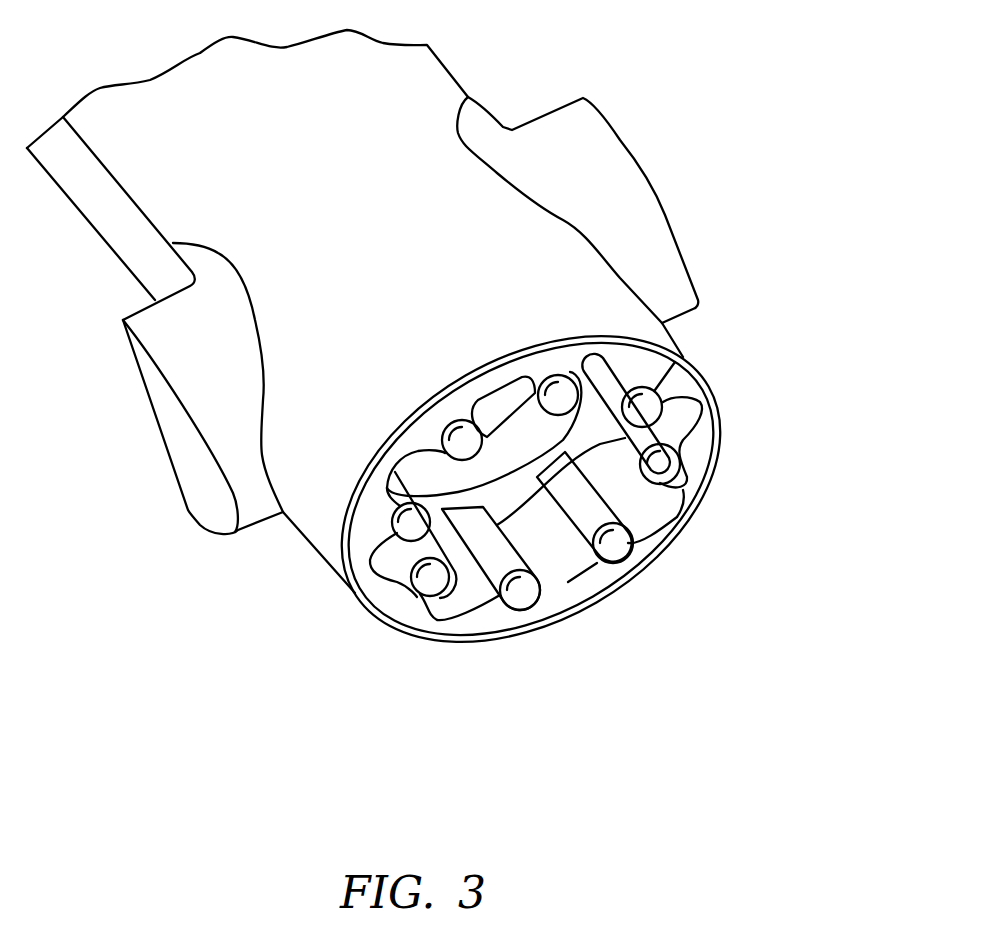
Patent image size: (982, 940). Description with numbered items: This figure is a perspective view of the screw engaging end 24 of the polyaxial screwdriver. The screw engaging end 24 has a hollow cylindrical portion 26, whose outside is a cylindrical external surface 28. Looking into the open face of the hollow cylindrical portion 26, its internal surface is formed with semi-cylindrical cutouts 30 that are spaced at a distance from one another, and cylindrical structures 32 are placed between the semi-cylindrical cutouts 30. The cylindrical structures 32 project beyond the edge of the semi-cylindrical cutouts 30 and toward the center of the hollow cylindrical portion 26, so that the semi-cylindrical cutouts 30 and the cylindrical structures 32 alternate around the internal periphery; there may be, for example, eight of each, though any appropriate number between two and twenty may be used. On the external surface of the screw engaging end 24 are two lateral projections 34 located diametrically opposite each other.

The screw engaging end 24 is at (755, 250).
The hollow cylindrical portion 26 is at (197, 568).
The cylindrical external surface 28 is at (324, 561).
The semi-cylindrical cutouts 30 is at (555, 580).
The cylindrical structures 32 is at (665, 465).
The lateral projections 34 is at (198, 373).